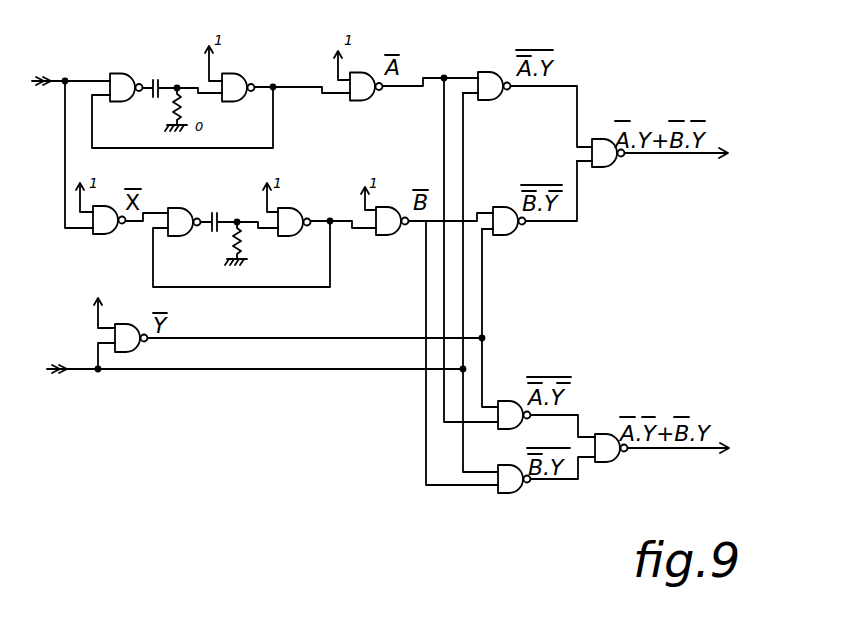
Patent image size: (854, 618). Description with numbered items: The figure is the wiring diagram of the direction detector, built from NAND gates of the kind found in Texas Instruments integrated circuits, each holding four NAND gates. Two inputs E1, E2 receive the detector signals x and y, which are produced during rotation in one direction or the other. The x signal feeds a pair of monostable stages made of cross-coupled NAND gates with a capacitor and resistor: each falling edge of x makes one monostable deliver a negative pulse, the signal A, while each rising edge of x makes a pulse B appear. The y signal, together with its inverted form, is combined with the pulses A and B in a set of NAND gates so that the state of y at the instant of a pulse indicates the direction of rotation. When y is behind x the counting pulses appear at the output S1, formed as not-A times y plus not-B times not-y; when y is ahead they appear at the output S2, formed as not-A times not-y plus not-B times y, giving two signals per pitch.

The first input (X signal) E1 is at (60, 68).
The second input (Y signal) E2 is at (82, 391).
The signal A is at (283, 74).
The pulse B is at (320, 202).
The output S1 is at (701, 152).
The output S2 is at (702, 447).